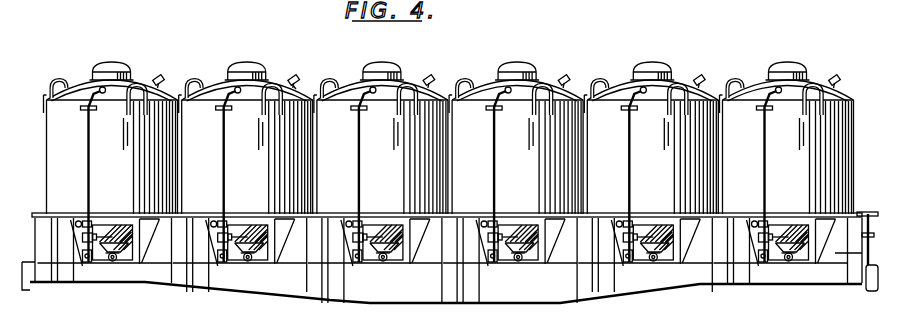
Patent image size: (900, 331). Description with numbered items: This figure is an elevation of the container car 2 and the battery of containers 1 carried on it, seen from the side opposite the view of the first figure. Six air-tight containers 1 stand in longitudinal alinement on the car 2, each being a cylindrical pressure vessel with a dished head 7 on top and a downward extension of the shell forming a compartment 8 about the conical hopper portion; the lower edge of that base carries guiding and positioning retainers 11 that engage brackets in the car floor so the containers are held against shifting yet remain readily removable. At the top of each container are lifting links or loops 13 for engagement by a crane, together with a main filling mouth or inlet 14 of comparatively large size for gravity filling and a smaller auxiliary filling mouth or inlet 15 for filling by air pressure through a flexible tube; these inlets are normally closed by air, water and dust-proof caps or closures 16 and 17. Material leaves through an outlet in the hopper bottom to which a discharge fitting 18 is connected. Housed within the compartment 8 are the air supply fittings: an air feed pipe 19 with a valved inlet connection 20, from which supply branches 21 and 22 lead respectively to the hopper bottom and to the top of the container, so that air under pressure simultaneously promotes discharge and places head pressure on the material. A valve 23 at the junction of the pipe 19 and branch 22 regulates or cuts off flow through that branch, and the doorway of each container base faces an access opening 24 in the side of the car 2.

The container 1 is at (57, 143).
The container car 2 is at (32, 240).
The dished head 7 is at (78, 79).
The compartment 8 is at (521, 233).
The guiding and positioning retainers 11 is at (543, 240).
The lifting links or loops 13 is at (63, 87).
The main control filling mouth or inlet 14 is at (127, 70).
The auxiliary filling mouth or inlet 15 is at (161, 80).
The cap or closure 16 is at (110, 64).
The cap or closure 17 is at (293, 83).
The discharge fitting 18 is at (518, 259).
The air feed pipe 19 is at (372, 262).
The valved inlet connection 20 is at (493, 263).
The supply branch 21 is at (372, 233).
The supply branch 22 is at (90, 137).
The valve 23 is at (350, 224).
The access opening 24 is at (262, 257).